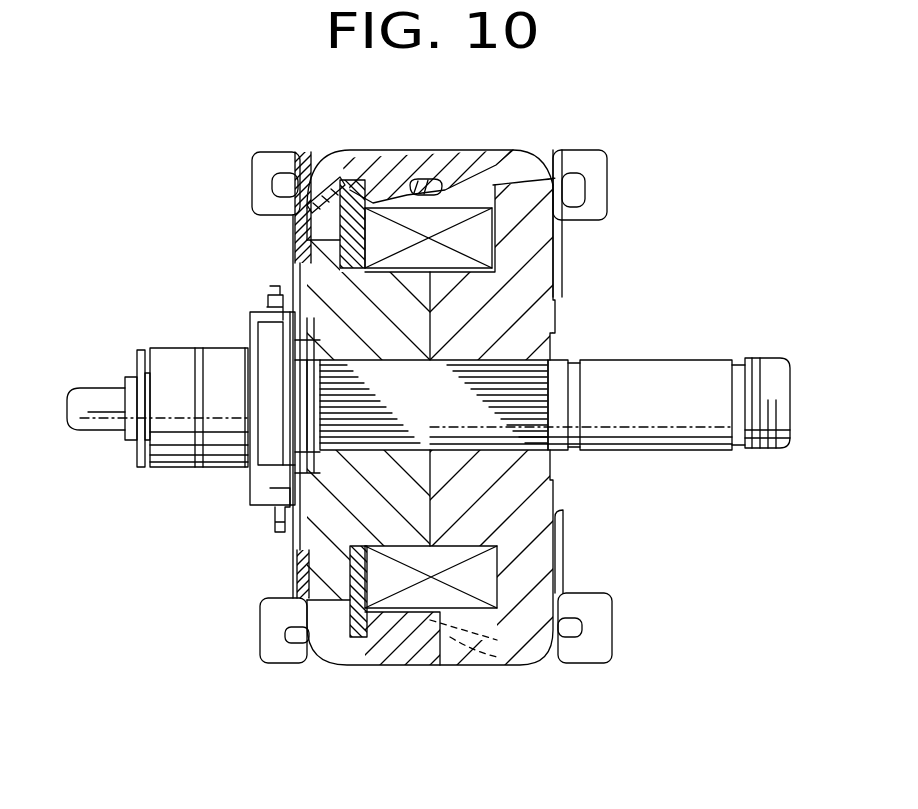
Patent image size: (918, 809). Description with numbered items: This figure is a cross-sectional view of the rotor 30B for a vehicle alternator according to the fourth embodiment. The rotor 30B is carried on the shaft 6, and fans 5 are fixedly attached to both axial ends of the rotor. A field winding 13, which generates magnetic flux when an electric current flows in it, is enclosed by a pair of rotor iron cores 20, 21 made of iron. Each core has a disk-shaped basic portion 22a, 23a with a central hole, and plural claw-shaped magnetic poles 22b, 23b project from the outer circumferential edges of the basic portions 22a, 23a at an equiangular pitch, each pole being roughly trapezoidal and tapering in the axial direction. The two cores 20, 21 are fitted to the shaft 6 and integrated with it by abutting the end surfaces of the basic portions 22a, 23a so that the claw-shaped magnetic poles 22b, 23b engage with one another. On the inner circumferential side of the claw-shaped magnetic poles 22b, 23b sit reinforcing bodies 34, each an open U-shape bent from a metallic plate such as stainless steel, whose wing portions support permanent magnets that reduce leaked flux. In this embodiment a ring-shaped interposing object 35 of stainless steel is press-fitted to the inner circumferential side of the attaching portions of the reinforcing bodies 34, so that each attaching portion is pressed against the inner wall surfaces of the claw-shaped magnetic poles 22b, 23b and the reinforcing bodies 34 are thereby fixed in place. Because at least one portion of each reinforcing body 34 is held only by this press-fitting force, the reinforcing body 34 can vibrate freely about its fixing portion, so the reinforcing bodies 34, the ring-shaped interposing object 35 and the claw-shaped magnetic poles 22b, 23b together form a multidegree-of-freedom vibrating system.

The rotor 30B is at (197, 136).
The fan 5 is at (598, 188).
The shaft 6 is at (673, 387).
The field winding 13 is at (480, 235).
The rotor iron core 20 is at (558, 482).
The rotor iron core 21 is at (270, 510).
The basic portion 22a is at (525, 305).
The claw-shaped magnetic pole 22b is at (518, 148).
The basic portion 23a is at (340, 293).
The claw-shaped magnetic pole 23b is at (335, 148).
The reinforcing body 34 is at (389, 153).
The ring-shaped interposing object 35 is at (428, 178).